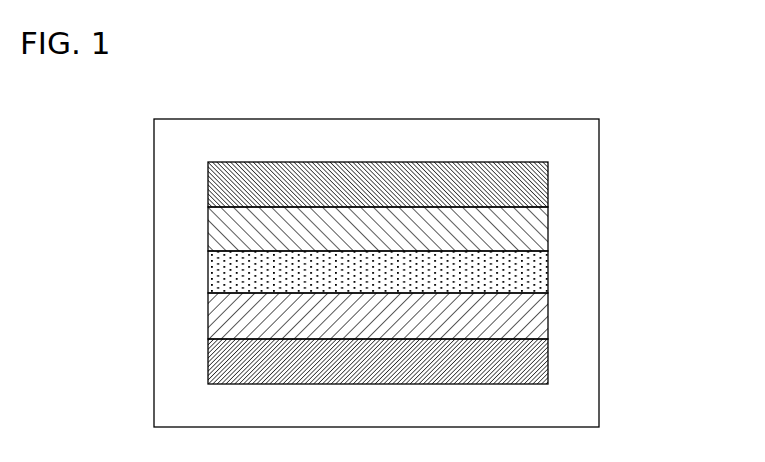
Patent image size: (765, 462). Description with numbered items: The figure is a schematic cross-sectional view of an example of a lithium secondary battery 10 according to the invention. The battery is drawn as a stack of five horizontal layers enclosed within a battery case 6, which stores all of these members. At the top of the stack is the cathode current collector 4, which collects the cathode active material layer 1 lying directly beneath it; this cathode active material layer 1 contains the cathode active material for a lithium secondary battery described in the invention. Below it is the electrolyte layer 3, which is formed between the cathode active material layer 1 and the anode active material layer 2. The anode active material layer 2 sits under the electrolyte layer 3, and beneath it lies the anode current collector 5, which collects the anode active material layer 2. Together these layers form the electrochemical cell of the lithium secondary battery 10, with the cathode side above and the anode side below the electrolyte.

The lithium secondary battery 10 is at (590, 63).
The battery case 6 is at (568, 136).
The cathode current collector 4 is at (543, 182).
The cathode active material layer 1 is at (540, 226).
The electrolyte layer 3 is at (528, 272).
The anode active material layer 2 is at (527, 318).
The anode current collector 5 is at (530, 358).